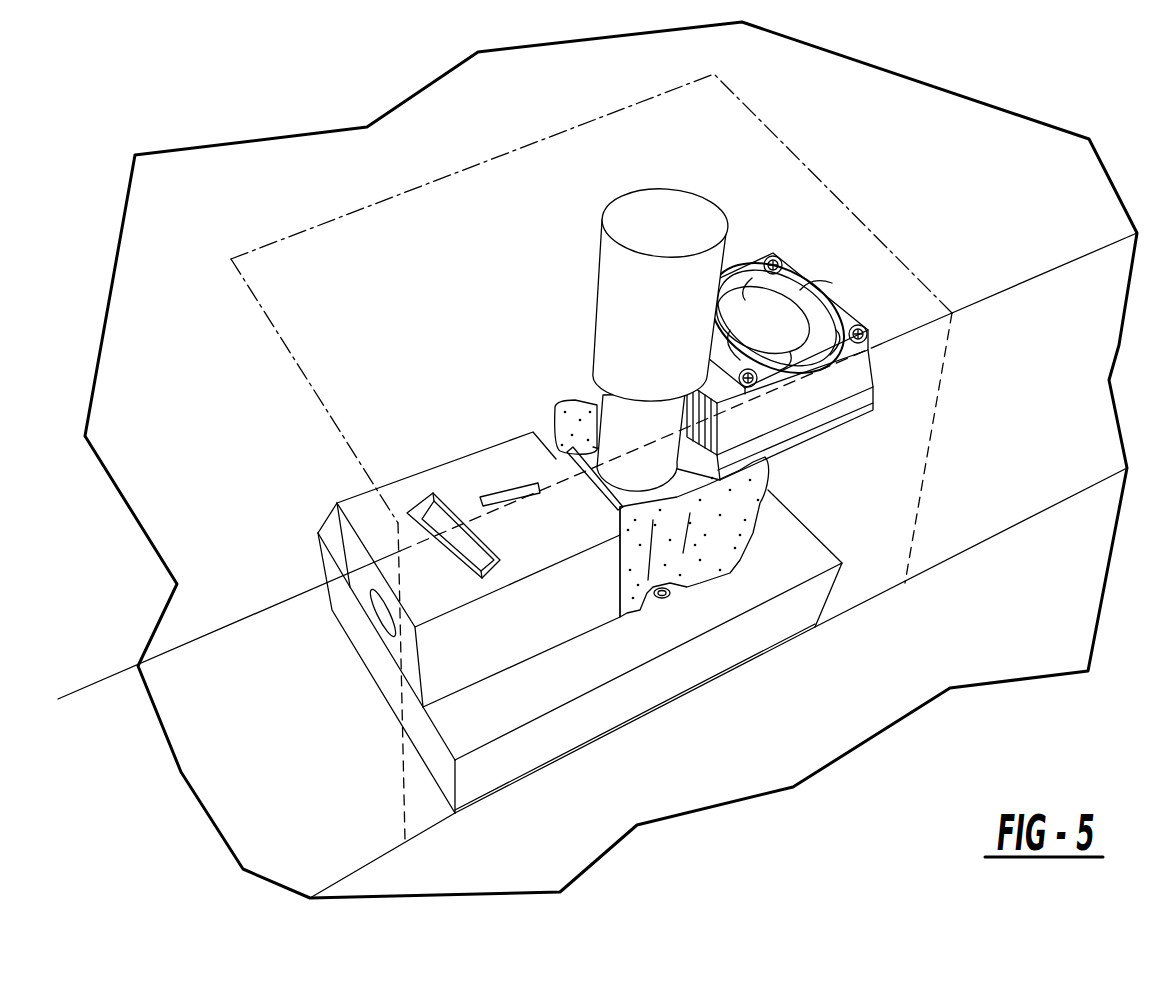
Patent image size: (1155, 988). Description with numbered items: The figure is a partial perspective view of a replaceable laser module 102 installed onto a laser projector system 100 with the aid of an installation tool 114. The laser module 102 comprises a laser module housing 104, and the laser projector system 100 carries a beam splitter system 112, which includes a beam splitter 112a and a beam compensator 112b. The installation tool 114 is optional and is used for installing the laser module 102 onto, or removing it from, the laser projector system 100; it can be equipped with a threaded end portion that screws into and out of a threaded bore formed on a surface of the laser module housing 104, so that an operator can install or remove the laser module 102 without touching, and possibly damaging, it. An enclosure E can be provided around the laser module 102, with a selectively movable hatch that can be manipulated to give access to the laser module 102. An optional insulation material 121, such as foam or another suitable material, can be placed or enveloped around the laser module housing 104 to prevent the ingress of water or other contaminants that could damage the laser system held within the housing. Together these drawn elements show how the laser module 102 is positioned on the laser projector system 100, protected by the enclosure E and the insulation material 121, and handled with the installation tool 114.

The laser projector system 100 is at (438, 279).
The laser module 102 is at (583, 433).
The laser module housing 104 is at (570, 464).
The beam splitter system 112 is at (442, 467).
The beam splitter 112a is at (456, 546).
The beam compensator 112b is at (532, 496).
The installation tool 114 is at (745, 228).
The insulation material 121 is at (765, 537).
The enclosure E is at (911, 420).